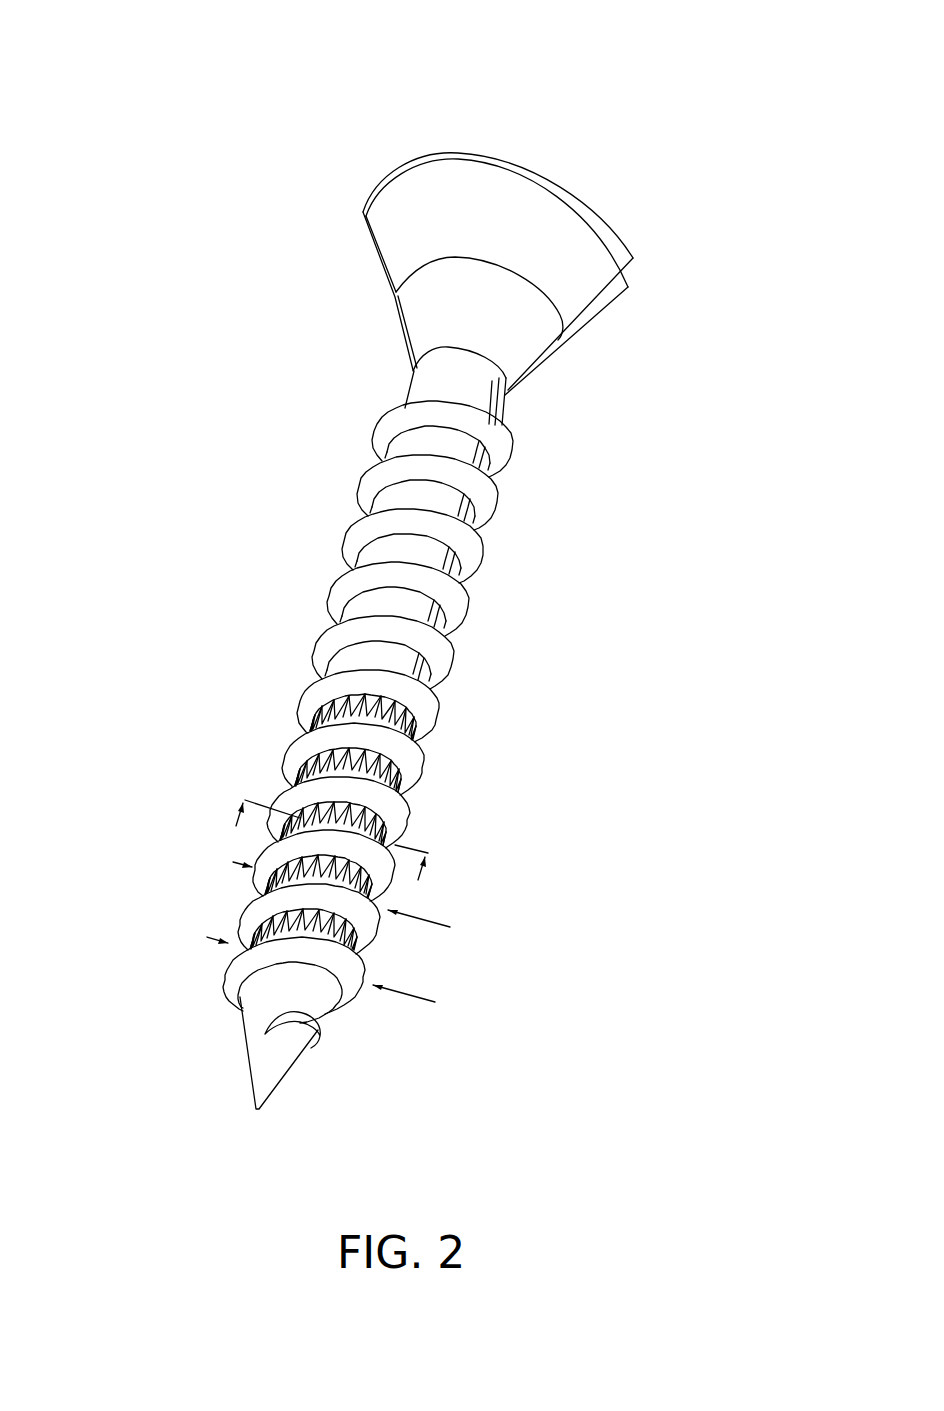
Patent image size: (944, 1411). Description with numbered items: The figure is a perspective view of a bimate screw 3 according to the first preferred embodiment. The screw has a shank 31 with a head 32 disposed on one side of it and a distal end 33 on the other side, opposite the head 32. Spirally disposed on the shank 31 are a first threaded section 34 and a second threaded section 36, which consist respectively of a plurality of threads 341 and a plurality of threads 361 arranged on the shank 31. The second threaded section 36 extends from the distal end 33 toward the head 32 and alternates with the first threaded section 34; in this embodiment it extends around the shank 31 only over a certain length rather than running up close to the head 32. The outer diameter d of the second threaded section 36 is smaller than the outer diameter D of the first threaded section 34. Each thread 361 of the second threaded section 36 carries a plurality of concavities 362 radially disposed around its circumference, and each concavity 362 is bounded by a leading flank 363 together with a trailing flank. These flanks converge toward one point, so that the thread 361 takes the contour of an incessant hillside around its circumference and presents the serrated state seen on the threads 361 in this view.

The bimate screw 3 is at (190, 124).
The head 32 is at (578, 186).
The shank 31 is at (472, 455).
The first threaded section 34 is at (445, 1047).
The threads 341 is at (487, 496).
The second threaded section 36 is at (262, 693).
The leading flank 363 is at (304, 724).
The threads 361 is at (408, 728).
The concavities 362 is at (408, 772).
The distal end 33 is at (300, 1063).